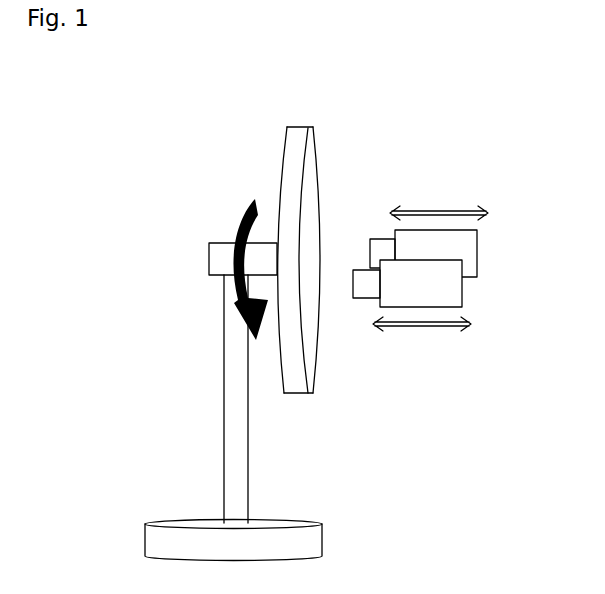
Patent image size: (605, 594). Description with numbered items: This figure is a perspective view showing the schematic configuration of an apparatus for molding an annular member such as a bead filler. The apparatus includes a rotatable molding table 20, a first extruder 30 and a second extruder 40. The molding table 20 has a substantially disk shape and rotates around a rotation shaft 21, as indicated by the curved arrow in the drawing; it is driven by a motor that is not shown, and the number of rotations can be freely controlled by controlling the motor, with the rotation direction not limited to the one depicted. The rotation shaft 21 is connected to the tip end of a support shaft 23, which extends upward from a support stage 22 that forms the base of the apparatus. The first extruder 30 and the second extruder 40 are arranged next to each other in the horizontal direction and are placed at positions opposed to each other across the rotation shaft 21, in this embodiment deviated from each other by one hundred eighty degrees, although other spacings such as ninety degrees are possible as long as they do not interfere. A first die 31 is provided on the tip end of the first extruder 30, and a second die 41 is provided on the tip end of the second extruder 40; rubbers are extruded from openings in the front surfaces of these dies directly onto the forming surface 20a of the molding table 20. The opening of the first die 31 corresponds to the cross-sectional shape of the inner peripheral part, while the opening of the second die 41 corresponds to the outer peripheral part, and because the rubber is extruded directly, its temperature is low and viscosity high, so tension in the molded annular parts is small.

The molding table 20 is at (299, 127).
The forming surface 20a is at (310, 162).
The rotation shaft 21 is at (222, 243).
The support stage 22 is at (183, 525).
The support shaft 23 is at (223, 388).
The first extruder 30 is at (492, 257).
The first die 31 is at (380, 238).
The second extruder 40 is at (478, 298).
The second die 41 is at (363, 299).